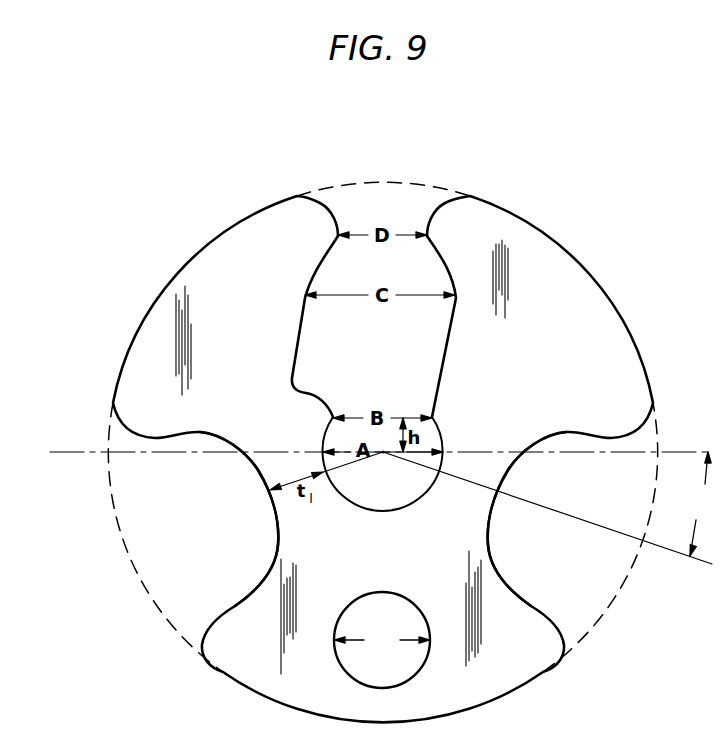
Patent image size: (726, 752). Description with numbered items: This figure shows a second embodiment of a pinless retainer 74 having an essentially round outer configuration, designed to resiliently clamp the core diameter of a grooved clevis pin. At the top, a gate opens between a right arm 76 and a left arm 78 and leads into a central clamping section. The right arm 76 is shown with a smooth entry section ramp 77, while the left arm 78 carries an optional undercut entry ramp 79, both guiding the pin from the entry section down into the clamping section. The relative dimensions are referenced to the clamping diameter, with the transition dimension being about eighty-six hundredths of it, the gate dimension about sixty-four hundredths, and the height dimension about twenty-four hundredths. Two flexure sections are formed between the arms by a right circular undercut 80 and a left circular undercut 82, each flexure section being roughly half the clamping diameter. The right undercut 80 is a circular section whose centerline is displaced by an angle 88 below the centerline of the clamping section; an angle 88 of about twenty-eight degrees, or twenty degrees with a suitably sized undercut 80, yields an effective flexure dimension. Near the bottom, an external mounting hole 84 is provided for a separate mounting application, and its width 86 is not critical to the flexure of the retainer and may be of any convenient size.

The pinless retainer 74 is at (525, 683).
The right arm 76 is at (558, 337).
The smooth entry section ramp 77 is at (447, 352).
The left arm 78 is at (240, 312).
The undercut entry ramp 79 is at (303, 344).
The right circular undercut 80 is at (497, 565).
The left circular undercut 82 is at (269, 556).
The external mounting hole 84 is at (355, 681).
The width of external mounting hole 86 is at (382, 640).
The angle 88 is at (701, 504).